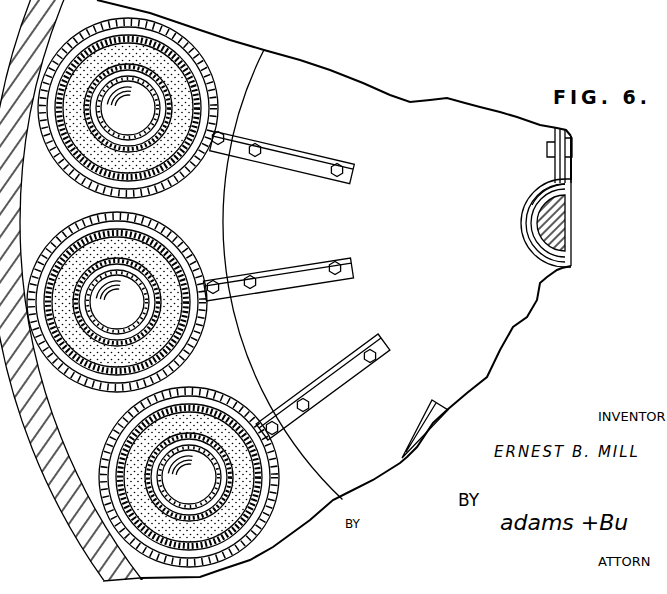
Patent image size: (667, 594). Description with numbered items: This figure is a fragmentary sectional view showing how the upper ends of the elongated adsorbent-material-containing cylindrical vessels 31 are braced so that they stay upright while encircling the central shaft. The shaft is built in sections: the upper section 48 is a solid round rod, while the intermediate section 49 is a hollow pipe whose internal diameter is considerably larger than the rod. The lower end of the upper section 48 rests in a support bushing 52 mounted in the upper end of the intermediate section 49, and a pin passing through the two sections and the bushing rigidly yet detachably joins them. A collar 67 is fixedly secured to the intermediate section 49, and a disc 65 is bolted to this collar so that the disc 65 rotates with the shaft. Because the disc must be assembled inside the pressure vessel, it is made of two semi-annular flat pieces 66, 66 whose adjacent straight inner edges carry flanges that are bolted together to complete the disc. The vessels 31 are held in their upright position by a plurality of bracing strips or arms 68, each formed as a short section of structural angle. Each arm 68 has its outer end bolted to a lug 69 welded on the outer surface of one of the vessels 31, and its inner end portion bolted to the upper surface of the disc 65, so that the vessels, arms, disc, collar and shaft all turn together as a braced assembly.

The cylindrical vessel 31 is at (213, 82).
The upper section 48 is at (566, 236).
The intermediate section 49 is at (573, 186).
The support bushing 52 is at (574, 200).
The disc 65 is at (457, 97).
The semi-annular flat piece 66 is at (477, 168).
The collar 67 is at (523, 223).
The bracing arm 68 is at (318, 157).
The lug 69 is at (218, 298).